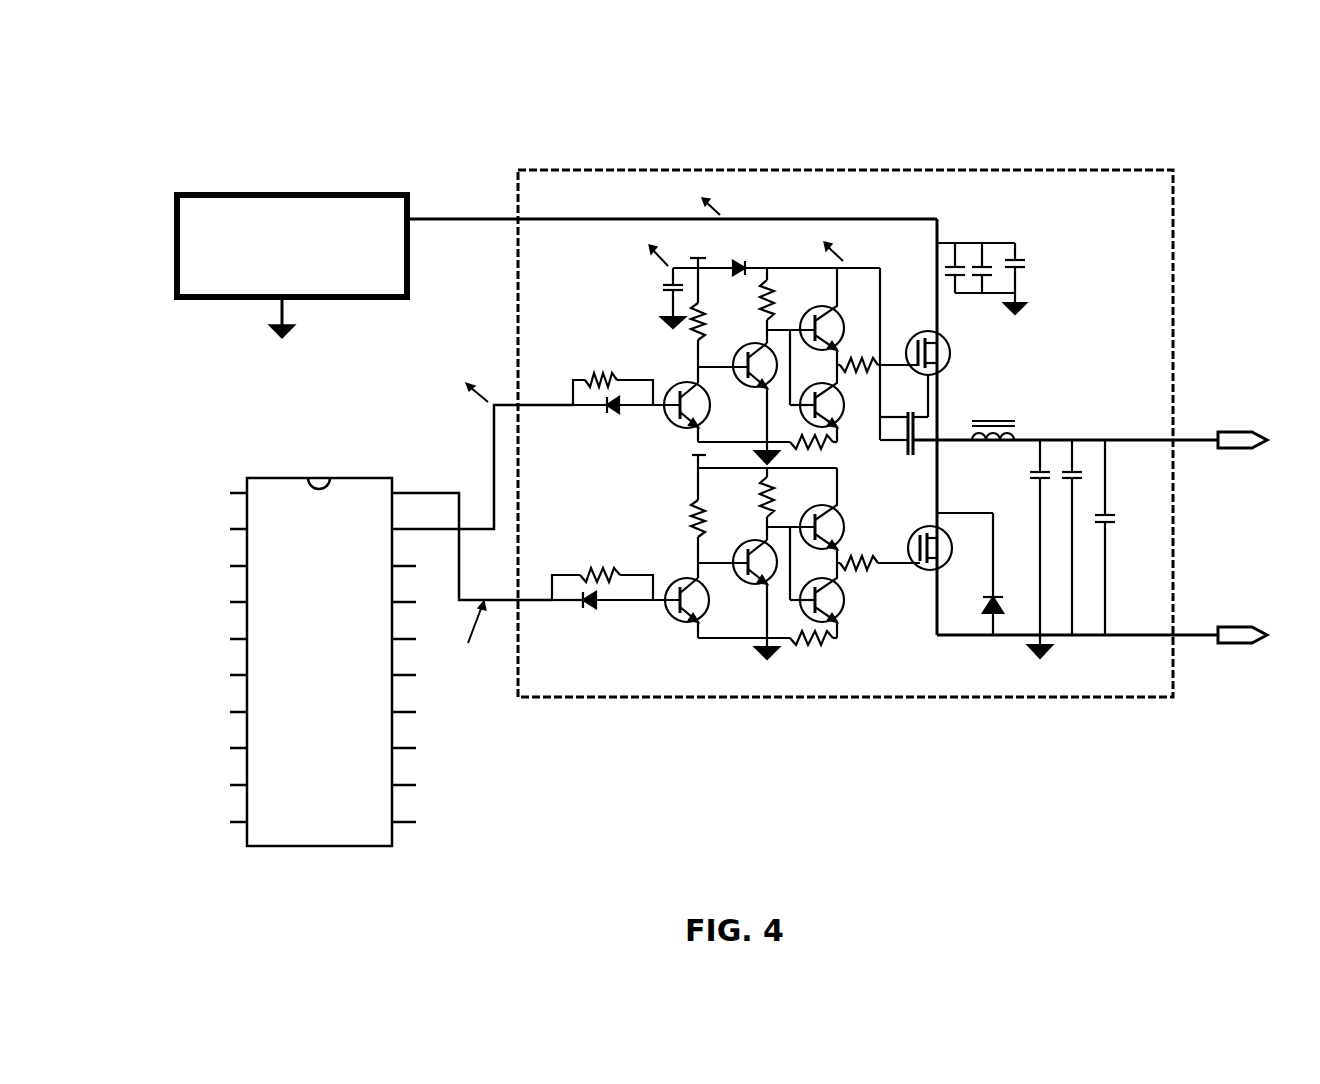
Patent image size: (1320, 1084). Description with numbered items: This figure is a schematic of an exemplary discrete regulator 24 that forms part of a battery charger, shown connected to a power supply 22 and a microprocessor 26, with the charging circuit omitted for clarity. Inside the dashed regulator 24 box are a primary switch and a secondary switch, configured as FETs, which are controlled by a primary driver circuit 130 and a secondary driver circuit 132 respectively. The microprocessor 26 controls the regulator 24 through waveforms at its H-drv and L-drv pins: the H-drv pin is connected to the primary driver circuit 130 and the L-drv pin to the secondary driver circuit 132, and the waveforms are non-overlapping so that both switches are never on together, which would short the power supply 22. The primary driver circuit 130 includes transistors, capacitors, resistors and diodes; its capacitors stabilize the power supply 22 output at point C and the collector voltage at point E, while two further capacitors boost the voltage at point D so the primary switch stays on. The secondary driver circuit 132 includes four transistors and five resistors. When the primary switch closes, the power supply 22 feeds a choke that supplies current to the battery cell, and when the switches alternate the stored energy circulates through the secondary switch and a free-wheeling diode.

The power supply 22 is at (410, 196).
The regulator 24 is at (1198, 158).
The microprocessor 26 is at (334, 850).
The primary driver circuit 130 is at (898, 234).
The secondary driver circuit 132 is at (814, 665).